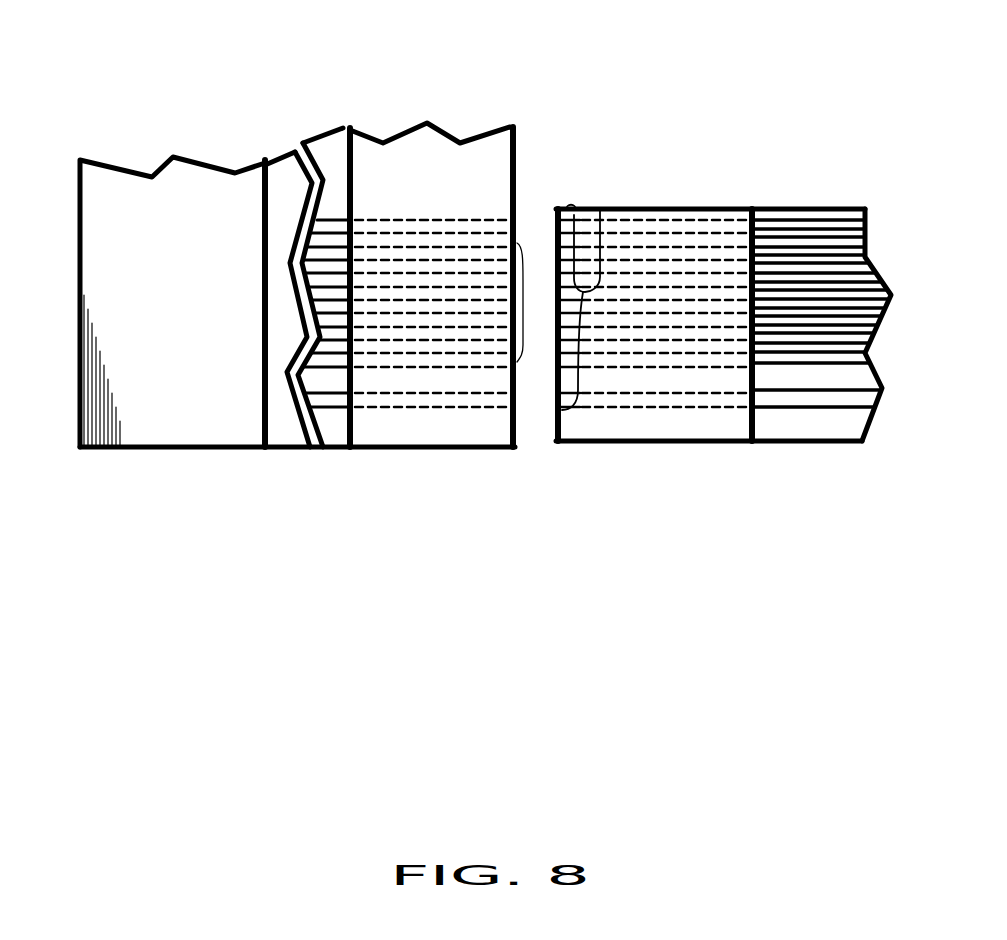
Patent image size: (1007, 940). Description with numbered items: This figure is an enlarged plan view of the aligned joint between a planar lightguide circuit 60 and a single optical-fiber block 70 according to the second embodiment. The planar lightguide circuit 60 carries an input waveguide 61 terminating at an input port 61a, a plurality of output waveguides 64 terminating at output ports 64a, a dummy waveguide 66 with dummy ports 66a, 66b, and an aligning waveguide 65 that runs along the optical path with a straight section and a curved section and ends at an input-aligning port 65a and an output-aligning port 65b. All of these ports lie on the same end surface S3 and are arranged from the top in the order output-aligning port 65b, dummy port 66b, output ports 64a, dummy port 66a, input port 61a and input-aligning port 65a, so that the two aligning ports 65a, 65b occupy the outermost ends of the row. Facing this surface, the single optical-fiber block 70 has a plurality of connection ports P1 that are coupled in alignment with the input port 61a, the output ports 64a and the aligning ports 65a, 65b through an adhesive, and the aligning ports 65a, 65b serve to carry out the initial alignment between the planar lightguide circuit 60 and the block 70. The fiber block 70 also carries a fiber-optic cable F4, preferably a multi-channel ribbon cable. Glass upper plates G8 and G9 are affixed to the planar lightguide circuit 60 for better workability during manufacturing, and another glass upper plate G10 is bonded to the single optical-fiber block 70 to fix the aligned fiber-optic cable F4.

The glass upper plate G8 is at (192, 193).
The glass upper plate G9 is at (392, 182).
The glass upper plate G10 is at (620, 208).
The fiber-optic cable F4 is at (823, 266).
The surface S3 is at (513, 167).
The connection ports P1 is at (600, 209).
The planar lightguide circuit 60 is at (389, 359).
The input waveguide 61 is at (308, 398).
The input port 61a is at (516, 393).
The output waveguides 64 is at (256, 307).
The output ports 64a is at (523, 295).
The aligning waveguide 65 is at (330, 228).
The input-aligning port 65a is at (513, 410).
The output-aligning port 65b is at (517, 212).
The dummy waveguide 66 is at (310, 240).
The dummy port 66a is at (516, 367).
The dummy port 66b is at (518, 222).
The single optical-fiber block 70 is at (723, 350).